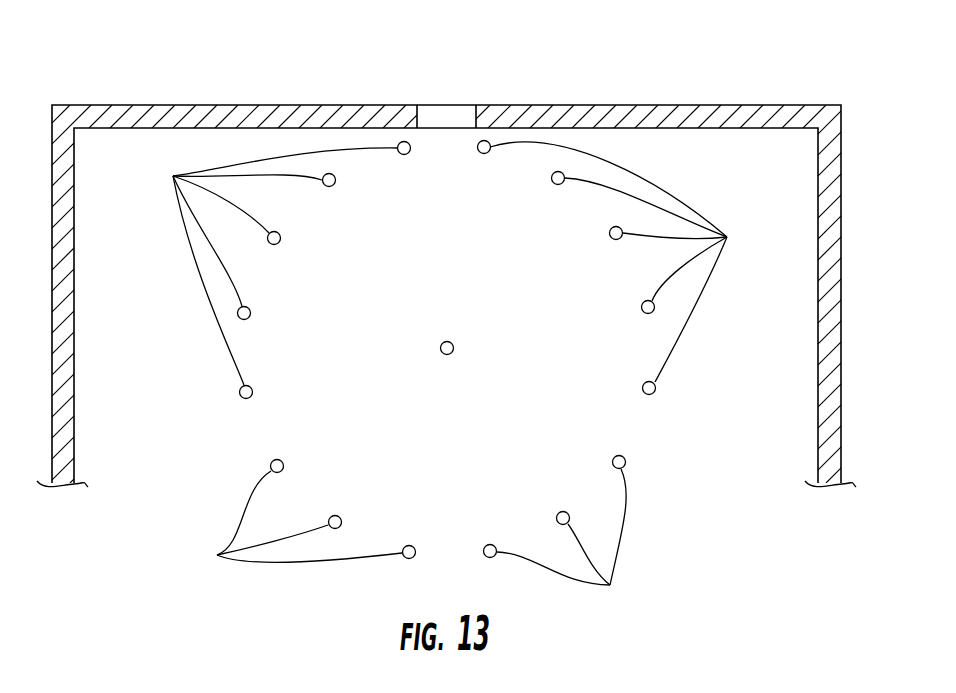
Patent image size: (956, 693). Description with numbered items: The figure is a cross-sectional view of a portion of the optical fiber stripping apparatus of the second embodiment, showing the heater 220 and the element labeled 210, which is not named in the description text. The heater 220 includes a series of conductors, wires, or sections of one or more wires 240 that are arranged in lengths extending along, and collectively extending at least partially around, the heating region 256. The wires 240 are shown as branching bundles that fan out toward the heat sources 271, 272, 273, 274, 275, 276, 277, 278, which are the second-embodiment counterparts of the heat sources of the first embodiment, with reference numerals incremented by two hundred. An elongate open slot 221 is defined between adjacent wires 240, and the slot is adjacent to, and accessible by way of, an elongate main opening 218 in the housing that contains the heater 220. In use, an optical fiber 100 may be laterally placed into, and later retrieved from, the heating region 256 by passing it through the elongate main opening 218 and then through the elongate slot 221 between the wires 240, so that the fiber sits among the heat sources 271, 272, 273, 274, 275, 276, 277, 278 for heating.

The enclosure housing 210 is at (779, 72).
The elongate main opening 218 is at (443, 122).
The heater 220 is at (172, 466).
The elongate open slot 221 is at (434, 149).
The wires 240 is at (452, 374).
The heating region 256 is at (565, 412).
The optical fiber 100 is at (440, 348).
The heat source 271 is at (478, 151).
The heat source 272 is at (409, 545).
The heat source 273 is at (251, 312).
The heat source 274 is at (642, 388).
The heat source 275 is at (328, 187).
The heat source 276 is at (558, 513).
The heat source 277 is at (283, 461).
The heat source 278 is at (609, 233).